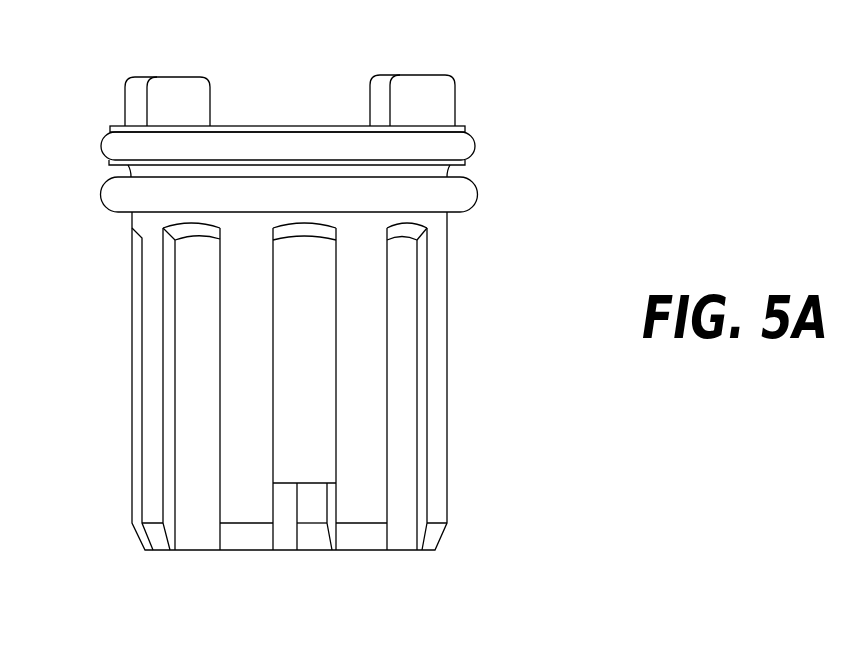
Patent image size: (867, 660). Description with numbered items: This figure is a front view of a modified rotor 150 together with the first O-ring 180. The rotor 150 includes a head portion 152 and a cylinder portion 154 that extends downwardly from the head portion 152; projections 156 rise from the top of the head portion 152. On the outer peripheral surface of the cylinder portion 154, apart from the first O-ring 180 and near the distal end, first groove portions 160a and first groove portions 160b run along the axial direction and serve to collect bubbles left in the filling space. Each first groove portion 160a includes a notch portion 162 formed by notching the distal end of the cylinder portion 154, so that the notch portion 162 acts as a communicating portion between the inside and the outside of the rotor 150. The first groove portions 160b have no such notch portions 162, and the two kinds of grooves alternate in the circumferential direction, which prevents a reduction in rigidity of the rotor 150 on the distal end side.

The rotor 150 is at (444, 367).
The head portion 152 is at (285, 126).
The cylinder portion 154 is at (372, 310).
The tabs 156 is at (426, 78).
The first groove portions 160a is at (290, 415).
The first groove portions 160b is at (190, 318).
The notch portions 162 is at (283, 483).
The first O-ring 180 is at (468, 190).